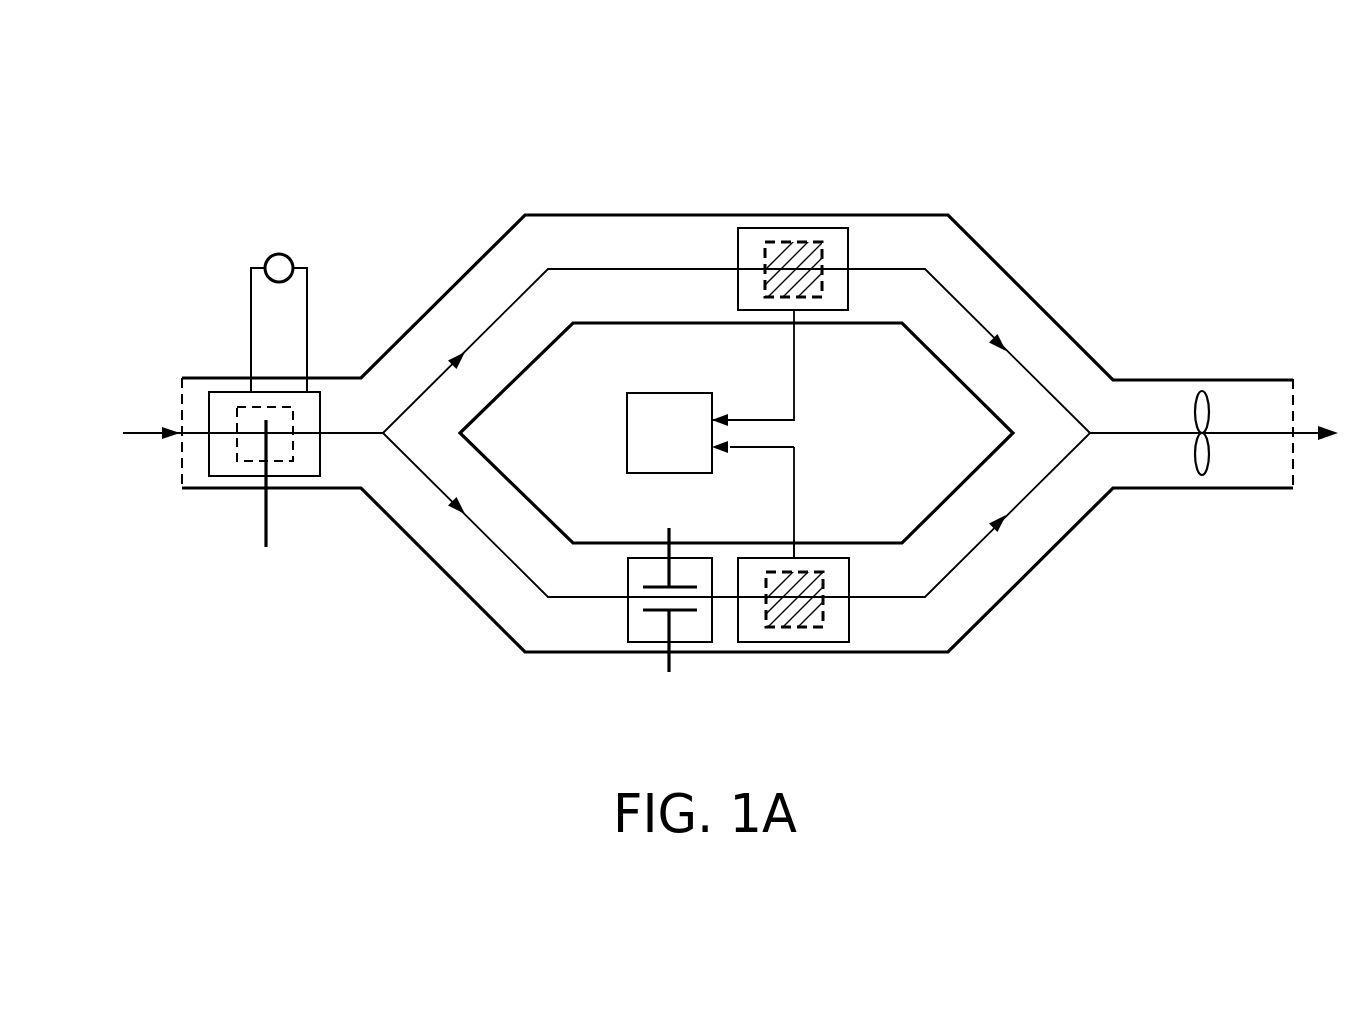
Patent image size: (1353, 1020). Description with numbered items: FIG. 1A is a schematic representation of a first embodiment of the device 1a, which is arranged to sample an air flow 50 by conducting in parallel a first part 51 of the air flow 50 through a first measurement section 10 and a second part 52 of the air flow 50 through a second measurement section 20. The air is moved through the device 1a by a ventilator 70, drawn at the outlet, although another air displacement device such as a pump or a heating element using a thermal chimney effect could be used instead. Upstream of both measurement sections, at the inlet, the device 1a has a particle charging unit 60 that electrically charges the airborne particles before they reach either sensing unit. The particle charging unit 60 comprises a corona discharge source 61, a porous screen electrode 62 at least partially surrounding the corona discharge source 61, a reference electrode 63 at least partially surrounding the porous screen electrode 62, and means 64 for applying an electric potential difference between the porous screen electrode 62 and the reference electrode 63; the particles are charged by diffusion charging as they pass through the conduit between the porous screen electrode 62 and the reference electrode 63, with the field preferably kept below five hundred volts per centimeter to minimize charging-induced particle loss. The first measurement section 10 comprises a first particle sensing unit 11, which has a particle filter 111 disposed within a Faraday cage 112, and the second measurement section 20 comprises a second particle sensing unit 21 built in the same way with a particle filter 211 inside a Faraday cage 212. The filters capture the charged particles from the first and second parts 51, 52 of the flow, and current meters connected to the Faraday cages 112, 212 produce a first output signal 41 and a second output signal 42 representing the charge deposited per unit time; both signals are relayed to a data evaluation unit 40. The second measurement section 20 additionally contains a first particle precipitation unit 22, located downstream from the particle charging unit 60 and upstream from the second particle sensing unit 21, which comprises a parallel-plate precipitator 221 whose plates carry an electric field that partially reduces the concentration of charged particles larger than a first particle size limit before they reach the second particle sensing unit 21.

The device 1a is at (392, 132).
The first measurement section 10 is at (556, 235).
The second measurement section 20 is at (557, 640).
The first particle sensing unit 11 is at (748, 233).
The particle filter 111 is at (808, 283).
The Faraday cage 112 is at (812, 243).
The second particle sensing unit 21 is at (748, 635).
The particle filter 211 is at (808, 573).
The Faraday cage 212 is at (813, 630).
The first particle precipitation unit 22 is at (642, 635).
The parallel-plate precipitator 221 is at (649, 580).
The data evaluation unit 40 is at (653, 448).
The first output signal 41 is at (795, 403).
The second output signal 42 is at (795, 463).
The air flow 50 is at (87, 449).
The first part of the air flow 51 is at (535, 284).
The second part of the air flow 52 is at (535, 582).
The particle charging unit 60 is at (218, 393).
The corona discharge source 61 is at (263, 533).
The porous screen electrode 62 is at (285, 407).
The reference electrode 63 is at (303, 477).
The means for applying an electric potential difference 64 is at (271, 256).
The ventilator 70 is at (1203, 388).